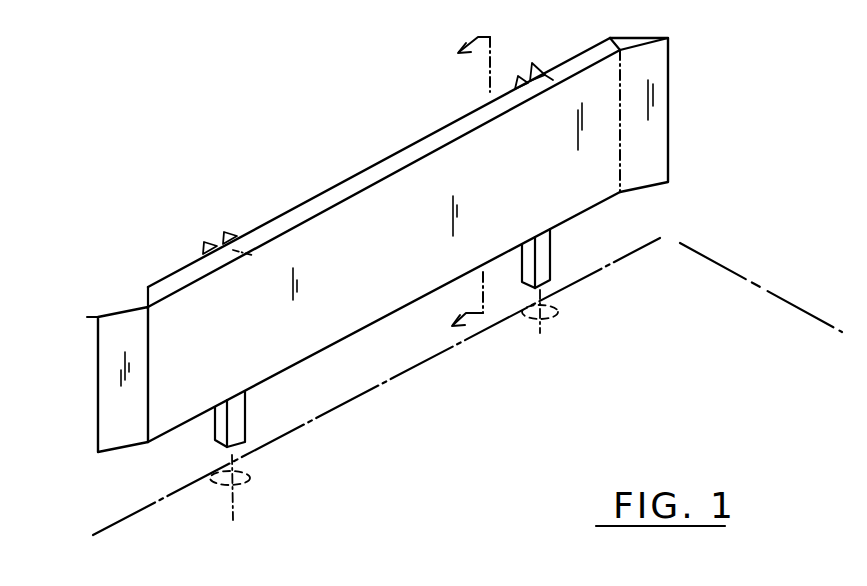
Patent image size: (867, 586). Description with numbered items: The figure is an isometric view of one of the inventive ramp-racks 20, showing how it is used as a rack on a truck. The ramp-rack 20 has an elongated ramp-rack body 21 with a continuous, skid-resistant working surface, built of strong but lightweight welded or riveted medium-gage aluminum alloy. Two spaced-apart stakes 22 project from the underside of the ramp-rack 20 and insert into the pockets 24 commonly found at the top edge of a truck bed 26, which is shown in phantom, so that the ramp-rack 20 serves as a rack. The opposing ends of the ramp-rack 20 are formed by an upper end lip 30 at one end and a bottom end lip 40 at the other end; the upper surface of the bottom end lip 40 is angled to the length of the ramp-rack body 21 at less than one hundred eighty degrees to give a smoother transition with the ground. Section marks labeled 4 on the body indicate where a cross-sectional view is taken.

The ramp-rack 20 is at (353, 163).
The ramp-rack body 21 is at (288, 220).
The stakes 22 is at (252, 417).
The pockets 24 is at (250, 470).
The truck bed 26 is at (733, 272).
The upper end lip 30 is at (100, 348).
The bottom end lip 40 is at (657, 72).
The section line 4- 4 is at (459, 190).